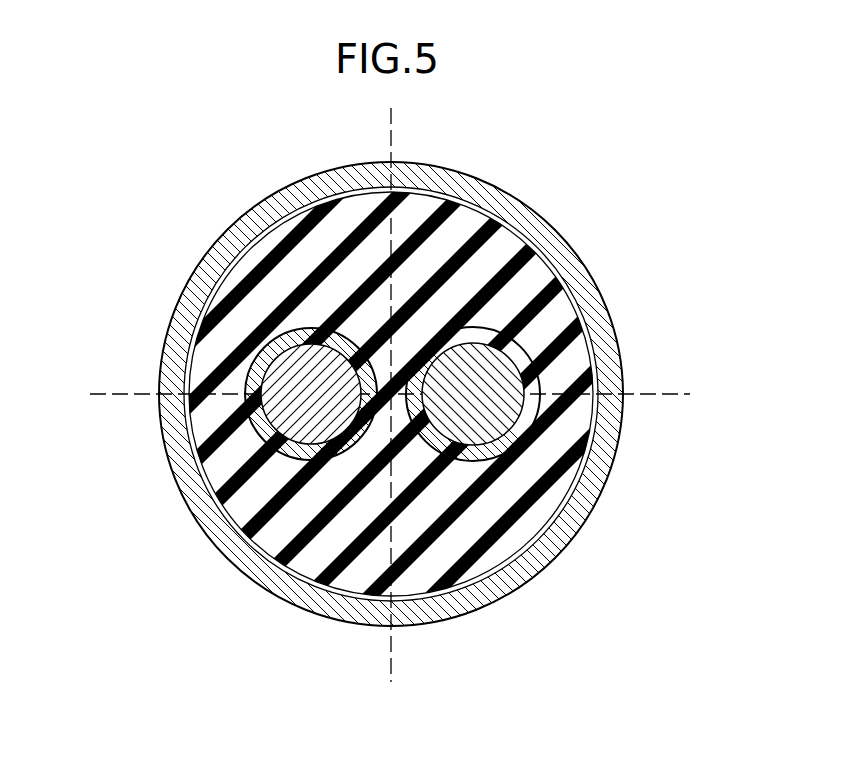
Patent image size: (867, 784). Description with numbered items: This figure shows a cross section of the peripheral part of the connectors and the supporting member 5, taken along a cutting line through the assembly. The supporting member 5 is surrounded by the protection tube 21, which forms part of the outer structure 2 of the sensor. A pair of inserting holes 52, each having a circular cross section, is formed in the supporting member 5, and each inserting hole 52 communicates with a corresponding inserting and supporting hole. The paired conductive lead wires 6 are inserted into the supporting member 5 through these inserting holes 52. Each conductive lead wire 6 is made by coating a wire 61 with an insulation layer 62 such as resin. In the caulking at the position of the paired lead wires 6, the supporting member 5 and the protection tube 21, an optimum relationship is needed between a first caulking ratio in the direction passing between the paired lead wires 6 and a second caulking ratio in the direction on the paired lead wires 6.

The tube 2 is at (433, 400).
The protection tube 21 is at (521, 218).
The supporting member 5 is at (488, 518).
The inserting hole 52 is at (316, 358).
The conductive lead wire 6 is at (356, 400).
The wire 61 is at (268, 438).
The insulation layer 62 is at (356, 400).